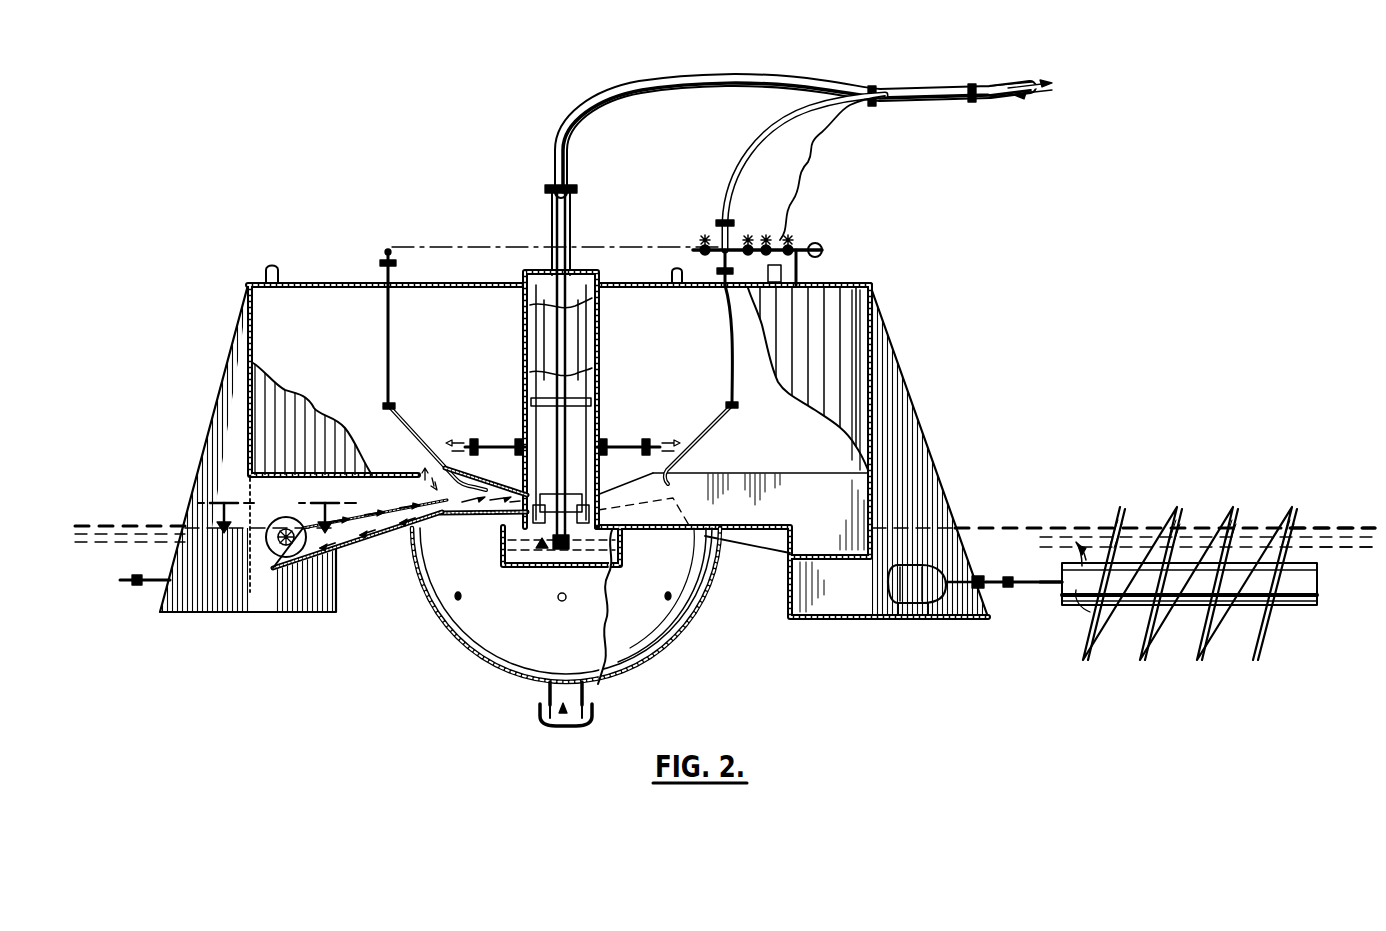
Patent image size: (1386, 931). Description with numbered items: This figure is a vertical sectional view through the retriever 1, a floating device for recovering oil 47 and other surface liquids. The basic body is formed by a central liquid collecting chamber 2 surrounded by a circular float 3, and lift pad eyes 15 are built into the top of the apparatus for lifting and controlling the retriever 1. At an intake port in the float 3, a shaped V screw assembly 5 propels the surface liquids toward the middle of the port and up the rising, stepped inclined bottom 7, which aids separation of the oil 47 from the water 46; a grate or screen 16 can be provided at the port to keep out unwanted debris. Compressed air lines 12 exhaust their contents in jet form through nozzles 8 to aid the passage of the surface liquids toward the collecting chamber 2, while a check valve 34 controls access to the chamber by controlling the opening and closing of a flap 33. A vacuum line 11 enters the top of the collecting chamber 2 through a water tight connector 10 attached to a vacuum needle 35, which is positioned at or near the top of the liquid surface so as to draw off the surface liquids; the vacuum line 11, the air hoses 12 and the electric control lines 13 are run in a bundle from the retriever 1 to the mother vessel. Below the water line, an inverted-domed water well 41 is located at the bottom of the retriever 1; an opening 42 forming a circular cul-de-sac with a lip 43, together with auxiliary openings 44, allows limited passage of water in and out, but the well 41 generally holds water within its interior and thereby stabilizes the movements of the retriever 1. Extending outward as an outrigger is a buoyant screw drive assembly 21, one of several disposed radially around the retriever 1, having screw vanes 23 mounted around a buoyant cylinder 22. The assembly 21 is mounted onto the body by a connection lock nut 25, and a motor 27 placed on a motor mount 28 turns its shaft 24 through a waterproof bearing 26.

The retriever 1 is at (426, 184).
The central liquid collecting chamber 2 is at (536, 562).
The circular float 3 is at (343, 333).
The shaped "V" screw assembly 5 is at (272, 556).
The rising inclined bottom 7 is at (380, 505).
The nozzle 8 is at (470, 483).
The water tight connector 10 is at (576, 192).
The vacuum line 11 is at (648, 88).
The compressed air line 12 is at (386, 262).
The electric control line 13 is at (800, 195).
The lift pad eye 15 is at (272, 270).
The grate or screen 16 is at (250, 555).
The screw drive assembly 21 is at (1174, 662).
The buoyant cylinder 22 is at (1288, 600).
The screw vane 23 is at (1258, 652).
The shaft 24 is at (1058, 592).
The connection lock nut 25 is at (146, 572).
The waterproof bearing 26 is at (980, 578).
The motor 27 is at (895, 588).
The motor mount 28 is at (922, 618).
The flap 33 is at (420, 494).
The check valve 34 is at (510, 433).
The vacuum needle 35 is at (572, 445).
The inverted-domed water well 41 is at (578, 639).
The opening 42 is at (572, 722).
The lip 43 is at (592, 712).
The auxiliary opening 44 is at (455, 600).
The water 46 is at (1316, 542).
The oil 47 is at (1310, 527).